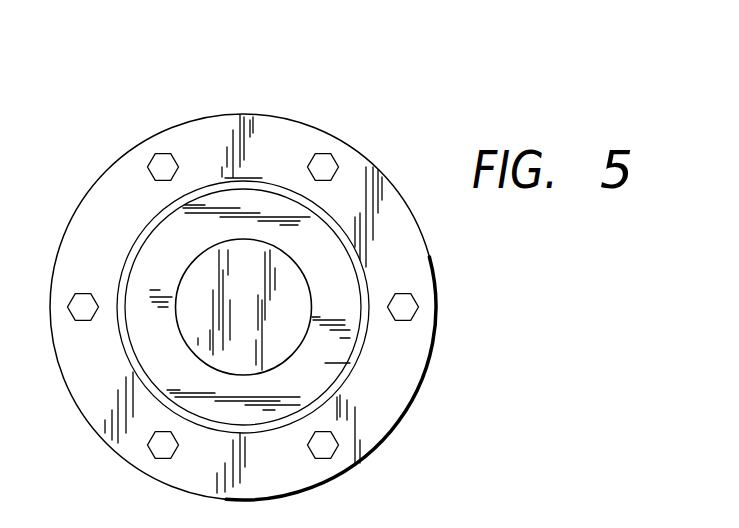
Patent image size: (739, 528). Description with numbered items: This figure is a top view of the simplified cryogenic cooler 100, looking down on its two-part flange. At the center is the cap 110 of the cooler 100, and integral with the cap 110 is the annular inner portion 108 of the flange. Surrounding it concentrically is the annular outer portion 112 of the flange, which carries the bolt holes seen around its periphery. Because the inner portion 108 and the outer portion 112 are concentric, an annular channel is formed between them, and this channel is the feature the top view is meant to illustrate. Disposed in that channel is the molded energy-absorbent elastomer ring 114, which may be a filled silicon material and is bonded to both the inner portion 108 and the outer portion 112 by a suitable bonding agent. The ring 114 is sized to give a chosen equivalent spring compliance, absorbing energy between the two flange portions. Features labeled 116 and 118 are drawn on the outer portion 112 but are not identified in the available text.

The cooler 100 is at (168, 93).
The annular inner portion 108 is at (327, 363).
The cap 110 is at (246, 260).
The annular outer portion 112 is at (115, 178).
The molded energy-absorbent elastomer ring 114 is at (340, 391).
The bolt 116 is at (81, 321).
The bolt head 118 is at (412, 294).